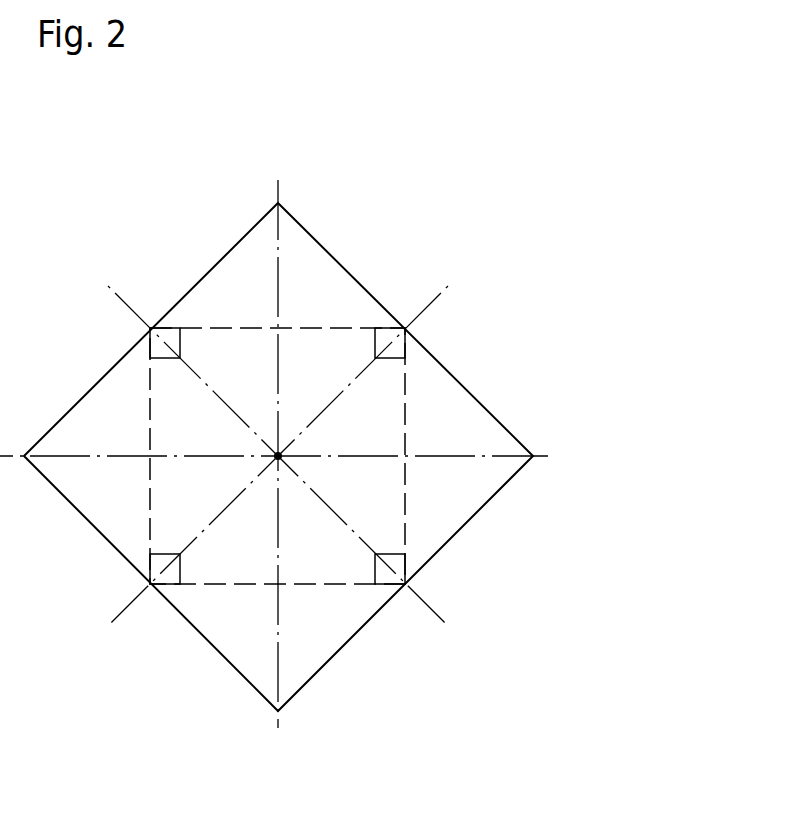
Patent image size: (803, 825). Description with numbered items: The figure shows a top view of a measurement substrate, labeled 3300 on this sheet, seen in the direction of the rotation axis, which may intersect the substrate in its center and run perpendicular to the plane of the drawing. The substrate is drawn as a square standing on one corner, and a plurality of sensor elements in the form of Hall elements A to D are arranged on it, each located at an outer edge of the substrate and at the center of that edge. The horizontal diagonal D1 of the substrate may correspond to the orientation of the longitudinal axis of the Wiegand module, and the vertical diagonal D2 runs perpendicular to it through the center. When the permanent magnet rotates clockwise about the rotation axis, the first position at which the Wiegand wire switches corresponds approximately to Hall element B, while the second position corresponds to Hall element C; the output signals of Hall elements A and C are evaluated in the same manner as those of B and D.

The pixel / sensor unit 3300 is at (556, 361).
The horizontal diagonal D1 is at (535, 461).
The second diagonal direction D2 is at (279, 232).